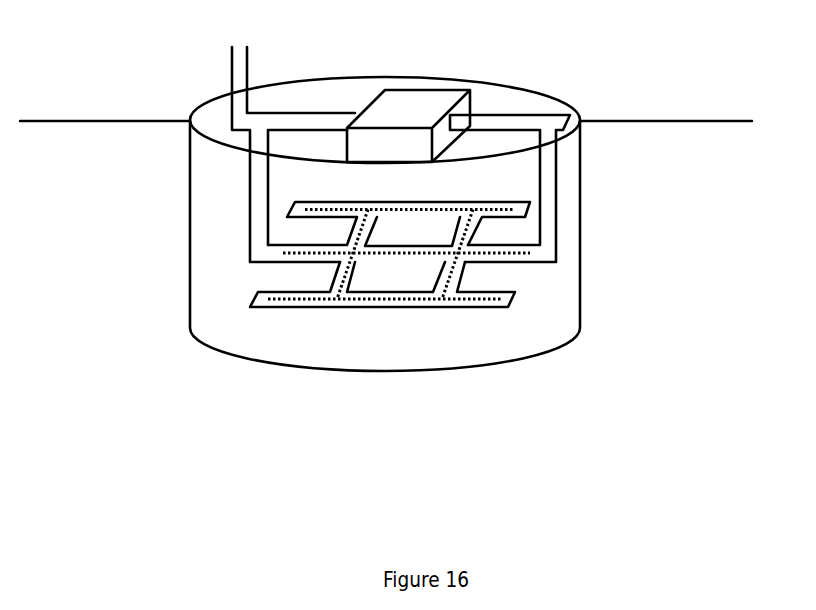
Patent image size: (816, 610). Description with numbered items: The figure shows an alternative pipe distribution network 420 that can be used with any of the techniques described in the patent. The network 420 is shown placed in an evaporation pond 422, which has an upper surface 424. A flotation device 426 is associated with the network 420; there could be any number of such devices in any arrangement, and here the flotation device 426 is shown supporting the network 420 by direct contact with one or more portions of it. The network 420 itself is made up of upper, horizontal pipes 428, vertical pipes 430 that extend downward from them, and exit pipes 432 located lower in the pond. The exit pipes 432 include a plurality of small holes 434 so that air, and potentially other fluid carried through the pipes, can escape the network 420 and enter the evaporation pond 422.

The pipe distribution network 420 is at (243, 315).
The evaporation pond 422 is at (563, 310).
The upper surface 424 is at (517, 100).
The flotation device 426 is at (417, 105).
The upper horizontal pipes 428 is at (313, 112).
The vertical pipes 430 is at (258, 188).
The exit pipes 432 is at (493, 308).
The small holes 434 is at (386, 300).